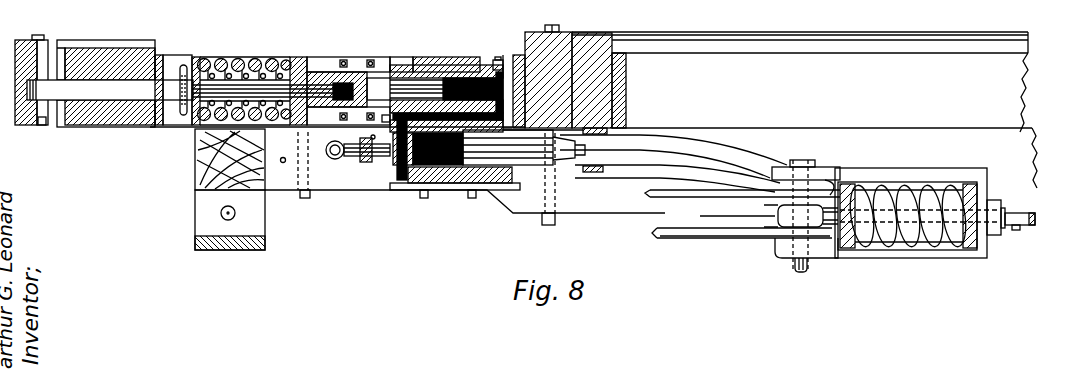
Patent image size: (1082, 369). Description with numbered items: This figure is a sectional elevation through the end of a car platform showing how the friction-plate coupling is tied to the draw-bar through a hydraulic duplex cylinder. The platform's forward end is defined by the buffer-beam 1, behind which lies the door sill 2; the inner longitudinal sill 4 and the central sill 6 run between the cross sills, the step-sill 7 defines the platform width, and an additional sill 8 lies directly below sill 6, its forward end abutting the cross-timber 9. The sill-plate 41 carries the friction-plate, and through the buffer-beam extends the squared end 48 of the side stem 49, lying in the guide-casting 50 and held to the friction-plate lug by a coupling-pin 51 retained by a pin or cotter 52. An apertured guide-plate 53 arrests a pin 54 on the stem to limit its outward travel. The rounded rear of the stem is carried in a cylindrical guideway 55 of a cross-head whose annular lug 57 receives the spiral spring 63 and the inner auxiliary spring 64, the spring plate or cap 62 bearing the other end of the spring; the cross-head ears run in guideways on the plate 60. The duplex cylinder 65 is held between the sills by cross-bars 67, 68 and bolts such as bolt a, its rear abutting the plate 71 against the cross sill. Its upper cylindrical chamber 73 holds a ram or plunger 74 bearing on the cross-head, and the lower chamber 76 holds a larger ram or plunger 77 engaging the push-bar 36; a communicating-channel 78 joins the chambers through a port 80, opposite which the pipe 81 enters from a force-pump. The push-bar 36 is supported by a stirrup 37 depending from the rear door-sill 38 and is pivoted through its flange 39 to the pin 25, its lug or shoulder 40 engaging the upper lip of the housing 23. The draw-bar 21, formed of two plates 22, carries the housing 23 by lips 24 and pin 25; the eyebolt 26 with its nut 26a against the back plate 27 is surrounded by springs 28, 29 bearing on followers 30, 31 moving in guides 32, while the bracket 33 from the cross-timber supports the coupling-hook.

The buffer-beam 1 is at (113, 126).
The door sill 2 is at (558, 42).
The inner longitudinal sill 4 is at (18, 82).
The central sill 6 is at (535, 257).
The step-sill 7 is at (522, 84).
The additional sill 8 is at (349, 197).
The cross-timber 9 is at (235, 209).
The draw-bar 21 is at (718, 244).
The plates 22 is at (665, 214).
The housing 23 is at (933, 173).
The lips 24 is at (833, 176).
The pin 25 is at (808, 170).
The eyebolt 26 is at (801, 216).
The nut 26a is at (1035, 216).
The back plate 27 is at (992, 236).
The spring 28 is at (902, 250).
The spring 29 is at (907, 182).
The follower 30 is at (967, 250).
The follower 31 is at (847, 249).
The guides 32 is at (999, 250).
The bracket 33 is at (197, 240).
The push-bar 36 is at (670, 142).
The stirrup 37 is at (549, 169).
The door-sill 38 is at (624, 101).
The flange 39 is at (785, 163).
The lug or shoulder 40 is at (712, 182).
The sill-plate 41 is at (100, 43).
The squared end 48 is at (180, 90).
The side stem 49 is at (270, 60).
The guide-casting 50 is at (93, 110).
The coupling-pin 51 is at (45, 42).
The pin or cotter 52 is at (40, 121).
The guide-plate 53 is at (160, 52).
The pin 54 is at (182, 116).
The cylindrical guideway 55 is at (348, 72).
The annular lug 57 is at (297, 57).
The plate 60 is at (327, 58).
The spring plate or cap 62 is at (190, 56).
The spiral spring 63 is at (234, 58).
The auxiliary spring 64 is at (198, 168).
The duplex cylinder 65 is at (488, 192).
The strap or cross-bar 67 is at (444, 185).
The strap or cross-bar 68 is at (447, 58).
The plate 71 is at (517, 56).
The cylindrical chamber 73 is at (497, 58).
The ram or plunger 74 is at (398, 83).
The chamber 76 is at (424, 196).
The ram or plunger 77 is at (533, 170).
The communicating-channel 78 is at (385, 160).
The port 80 is at (407, 193).
The pipe 81 is at (357, 162).
The bolt a is at (308, 192).